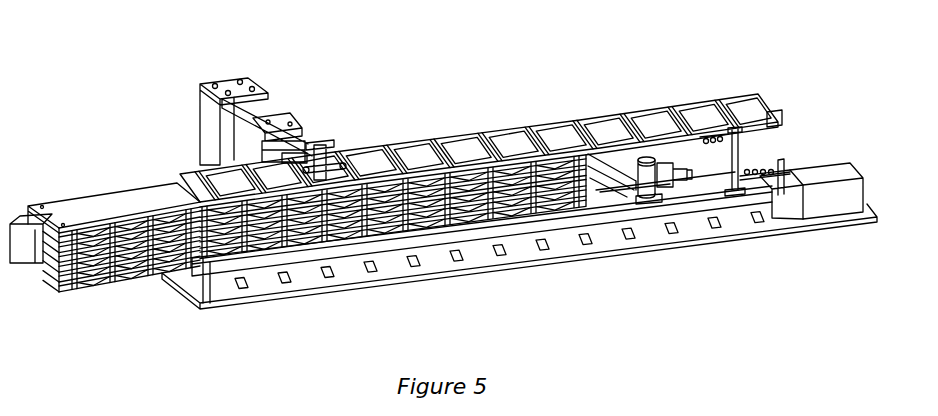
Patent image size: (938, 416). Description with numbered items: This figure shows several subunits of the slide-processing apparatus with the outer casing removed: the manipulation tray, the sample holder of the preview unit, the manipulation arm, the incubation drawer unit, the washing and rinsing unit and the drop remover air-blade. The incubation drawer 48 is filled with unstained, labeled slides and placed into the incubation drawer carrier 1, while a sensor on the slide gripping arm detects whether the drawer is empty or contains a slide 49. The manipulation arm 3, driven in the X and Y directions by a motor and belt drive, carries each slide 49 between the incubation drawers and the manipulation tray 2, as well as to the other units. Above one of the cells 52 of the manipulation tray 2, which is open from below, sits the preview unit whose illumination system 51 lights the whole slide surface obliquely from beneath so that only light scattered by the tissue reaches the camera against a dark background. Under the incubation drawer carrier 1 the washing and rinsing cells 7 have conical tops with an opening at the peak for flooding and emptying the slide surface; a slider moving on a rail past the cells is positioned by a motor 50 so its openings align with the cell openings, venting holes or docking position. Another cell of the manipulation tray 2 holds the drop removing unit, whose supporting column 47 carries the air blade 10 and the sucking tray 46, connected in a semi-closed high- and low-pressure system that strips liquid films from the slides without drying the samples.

The incubation drawer carrier 1 is at (705, 186).
The manipulation tray 2 is at (516, 137).
The manipulation arm 3 is at (650, 203).
The washing and rinsing cell 7 is at (242, 292).
The air blade 10 is at (323, 147).
The sucking tray 46 is at (278, 121).
The supporting column 47 is at (222, 79).
The incubation drawer 48 is at (117, 205).
The slide 49 is at (612, 163).
The motor 50 is at (798, 197).
The illumination system 51 is at (768, 157).
The cell 52 is at (739, 117).